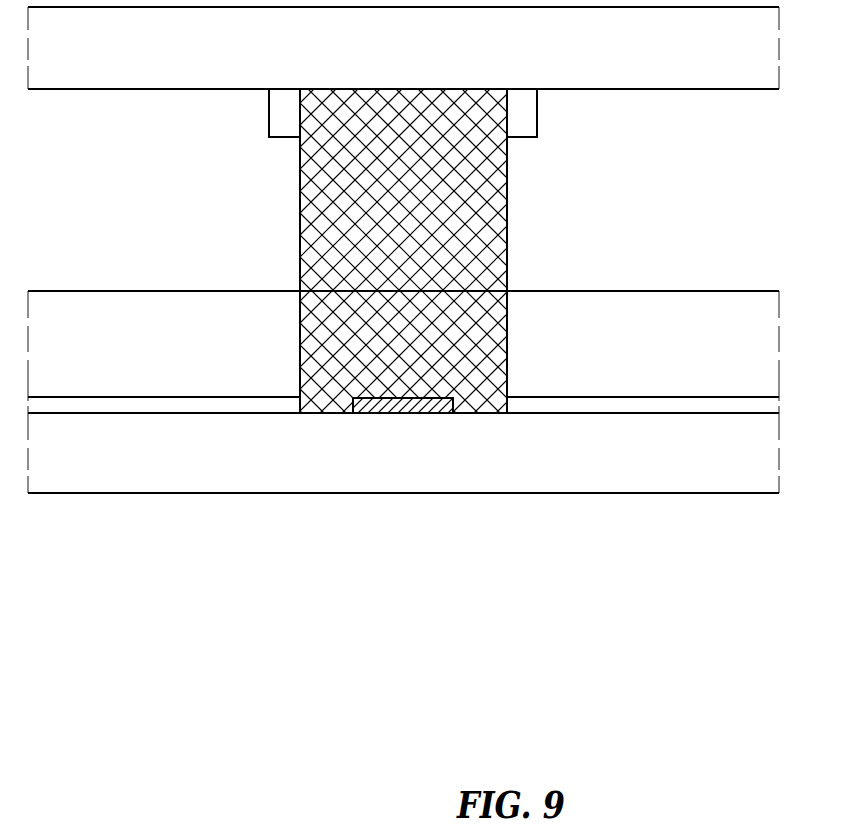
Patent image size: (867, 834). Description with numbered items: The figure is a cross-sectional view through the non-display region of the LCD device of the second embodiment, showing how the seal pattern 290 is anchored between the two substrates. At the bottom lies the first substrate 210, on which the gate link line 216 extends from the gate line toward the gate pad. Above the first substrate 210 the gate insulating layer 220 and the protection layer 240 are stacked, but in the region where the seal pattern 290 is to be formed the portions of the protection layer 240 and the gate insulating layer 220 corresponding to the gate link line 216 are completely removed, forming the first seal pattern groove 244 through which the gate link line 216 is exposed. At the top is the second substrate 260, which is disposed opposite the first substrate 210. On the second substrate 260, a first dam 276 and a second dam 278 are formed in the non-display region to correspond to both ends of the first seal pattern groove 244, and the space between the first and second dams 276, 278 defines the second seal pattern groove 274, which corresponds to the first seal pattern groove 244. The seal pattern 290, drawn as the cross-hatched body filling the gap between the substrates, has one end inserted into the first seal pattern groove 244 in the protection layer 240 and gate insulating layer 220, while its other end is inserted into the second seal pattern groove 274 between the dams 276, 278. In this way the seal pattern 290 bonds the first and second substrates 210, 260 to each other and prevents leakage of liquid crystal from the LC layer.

The second substrate 260 is at (724, 61).
The protection layer 240 is at (665, 313).
The gate insulating layer 220 is at (569, 403).
The first substrate 210 is at (724, 465).
The seal pattern 290 is at (493, 177).
The gate link line 216 is at (390, 413).
The second dam 278 is at (280, 114).
The first dam 276 is at (527, 114).
The second seal pattern groove 274 is at (368, 117).
The first seal pattern groove 244 is at (450, 325).